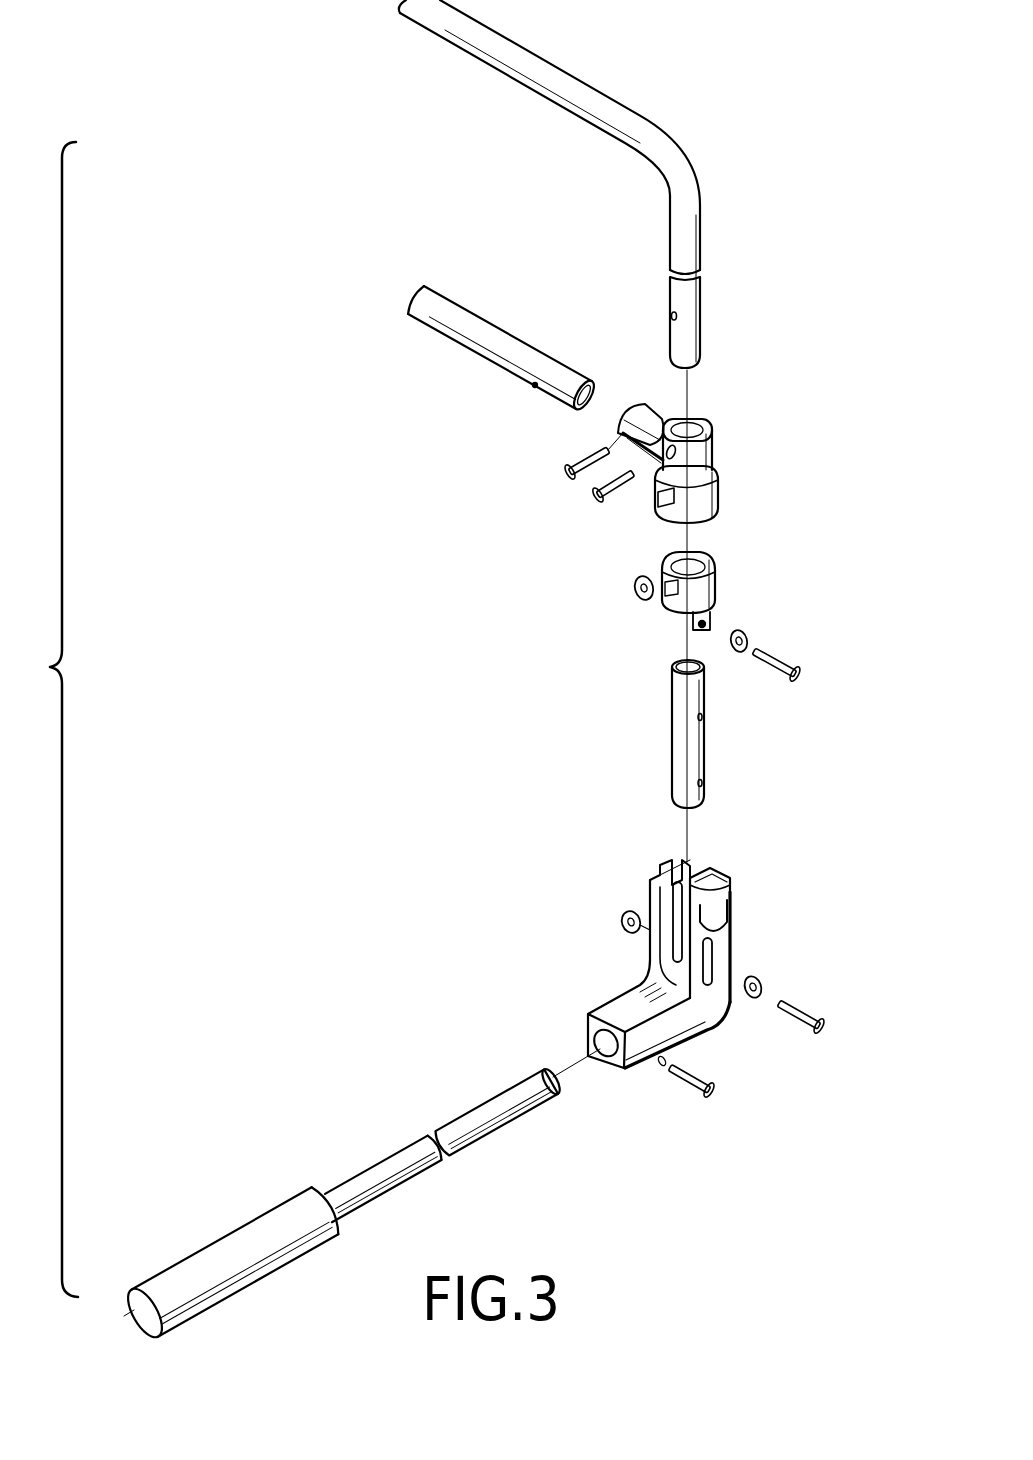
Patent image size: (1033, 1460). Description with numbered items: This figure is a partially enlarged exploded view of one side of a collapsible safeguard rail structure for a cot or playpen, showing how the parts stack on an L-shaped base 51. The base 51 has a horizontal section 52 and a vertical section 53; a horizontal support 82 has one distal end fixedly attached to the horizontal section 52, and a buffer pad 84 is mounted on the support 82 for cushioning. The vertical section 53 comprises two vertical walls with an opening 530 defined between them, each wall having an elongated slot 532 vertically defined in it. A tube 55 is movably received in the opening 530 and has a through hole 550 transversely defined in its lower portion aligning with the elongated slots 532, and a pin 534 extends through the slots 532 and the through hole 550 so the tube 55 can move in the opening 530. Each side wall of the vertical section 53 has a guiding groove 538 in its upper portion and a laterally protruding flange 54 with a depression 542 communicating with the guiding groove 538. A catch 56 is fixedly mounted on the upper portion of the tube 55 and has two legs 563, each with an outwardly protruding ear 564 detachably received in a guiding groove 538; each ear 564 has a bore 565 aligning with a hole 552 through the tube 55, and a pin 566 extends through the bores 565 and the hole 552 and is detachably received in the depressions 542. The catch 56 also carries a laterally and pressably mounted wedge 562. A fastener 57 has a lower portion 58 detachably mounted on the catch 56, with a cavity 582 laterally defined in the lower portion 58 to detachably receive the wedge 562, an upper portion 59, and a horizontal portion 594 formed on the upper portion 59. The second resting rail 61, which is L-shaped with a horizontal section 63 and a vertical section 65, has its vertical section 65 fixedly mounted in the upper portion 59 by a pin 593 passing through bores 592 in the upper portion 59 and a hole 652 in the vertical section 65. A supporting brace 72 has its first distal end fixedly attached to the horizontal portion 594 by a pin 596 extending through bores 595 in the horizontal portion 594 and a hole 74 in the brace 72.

The second resting rail 61 is at (579, 184).
The horizontal section 63 is at (540, 62).
The vertical section 65 is at (688, 291).
The hole 652 is at (671, 313).
The supporting brace 72 is at (501, 354).
The hole 74 is at (533, 387).
The fastener 57 is at (642, 451).
The upper portion 59 is at (705, 432).
The lower portion 58 is at (696, 512).
The cavity 582 is at (662, 504).
The bore 592 is at (663, 425).
The pin 593 is at (600, 502).
The horizontal portion 594 is at (633, 406).
The bore 595 is at (617, 442).
The pin 596 is at (588, 480).
The catch 56 is at (717, 599).
The wedge 562 is at (656, 596).
The leg 563 is at (707, 597).
The ear 564 is at (710, 613).
The bore 565 is at (696, 632).
The pin 566 is at (787, 656).
The tube 55 is at (701, 738).
The hole 552 is at (703, 717).
The through hole 550 is at (704, 783).
The L-shaped base 51 is at (704, 976).
The horizontal section 52 is at (656, 1070).
The vertical section 53 is at (698, 947).
The opening 530 is at (660, 970).
The elongated slot 532 is at (712, 988).
The pin 534 is at (800, 1010).
The guiding groove 538 is at (706, 890).
The flange 54 is at (743, 883).
The depression 542 is at (670, 870).
The horizontal support 82 is at (388, 1156).
The buffer pad 84 is at (272, 1215).